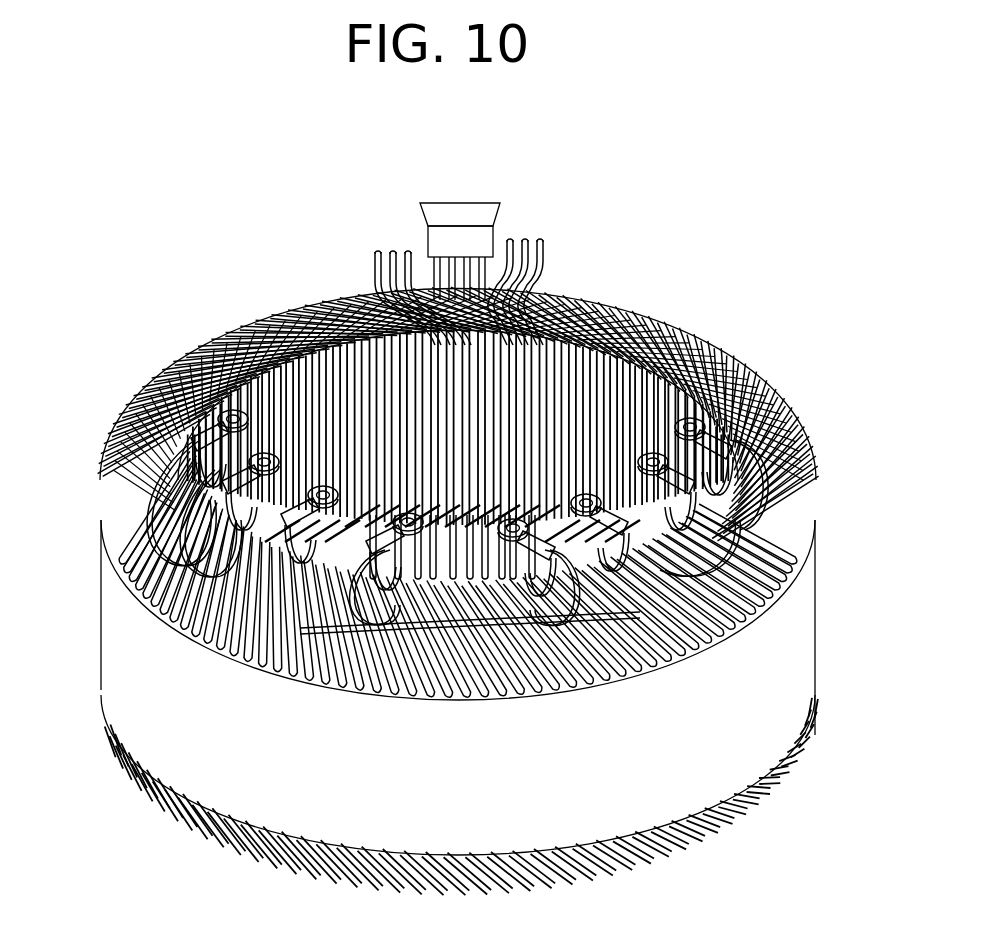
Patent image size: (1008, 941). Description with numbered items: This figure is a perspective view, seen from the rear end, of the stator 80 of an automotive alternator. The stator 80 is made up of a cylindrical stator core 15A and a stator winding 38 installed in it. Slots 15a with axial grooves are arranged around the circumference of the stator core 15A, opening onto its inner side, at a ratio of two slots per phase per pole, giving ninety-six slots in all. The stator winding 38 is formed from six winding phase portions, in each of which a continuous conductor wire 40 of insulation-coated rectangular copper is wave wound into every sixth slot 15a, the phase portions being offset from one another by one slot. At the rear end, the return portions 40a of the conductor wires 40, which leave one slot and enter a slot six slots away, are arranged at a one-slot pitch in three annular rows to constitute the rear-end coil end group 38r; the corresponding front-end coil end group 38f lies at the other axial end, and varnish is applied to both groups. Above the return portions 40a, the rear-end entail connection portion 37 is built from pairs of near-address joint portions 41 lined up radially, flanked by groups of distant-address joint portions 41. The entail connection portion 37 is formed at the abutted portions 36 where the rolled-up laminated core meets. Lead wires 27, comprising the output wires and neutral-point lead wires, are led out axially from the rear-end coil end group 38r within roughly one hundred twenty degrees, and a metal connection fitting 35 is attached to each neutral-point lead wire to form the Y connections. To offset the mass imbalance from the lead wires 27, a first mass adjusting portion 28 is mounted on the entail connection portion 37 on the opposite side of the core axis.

The stator 80 is at (122, 260).
The stator core 15A is at (822, 534).
The slots 15a is at (762, 607).
The lead wires 27 is at (752, 432).
The first mass adjusting portion 28 is at (430, 207).
The metal connection fitting 35 is at (716, 432).
The abutted portions 36 is at (450, 407).
The entail connection portion 37 is at (527, 241).
The stator winding 38 is at (708, 332).
The rear-end coil end group 38r is at (124, 414).
The front-end coil end group 38f is at (126, 764).
The continuous conductor wire 40 is at (638, 306).
The return portions 40a is at (597, 300).
The joint portions 41 is at (450, 594).